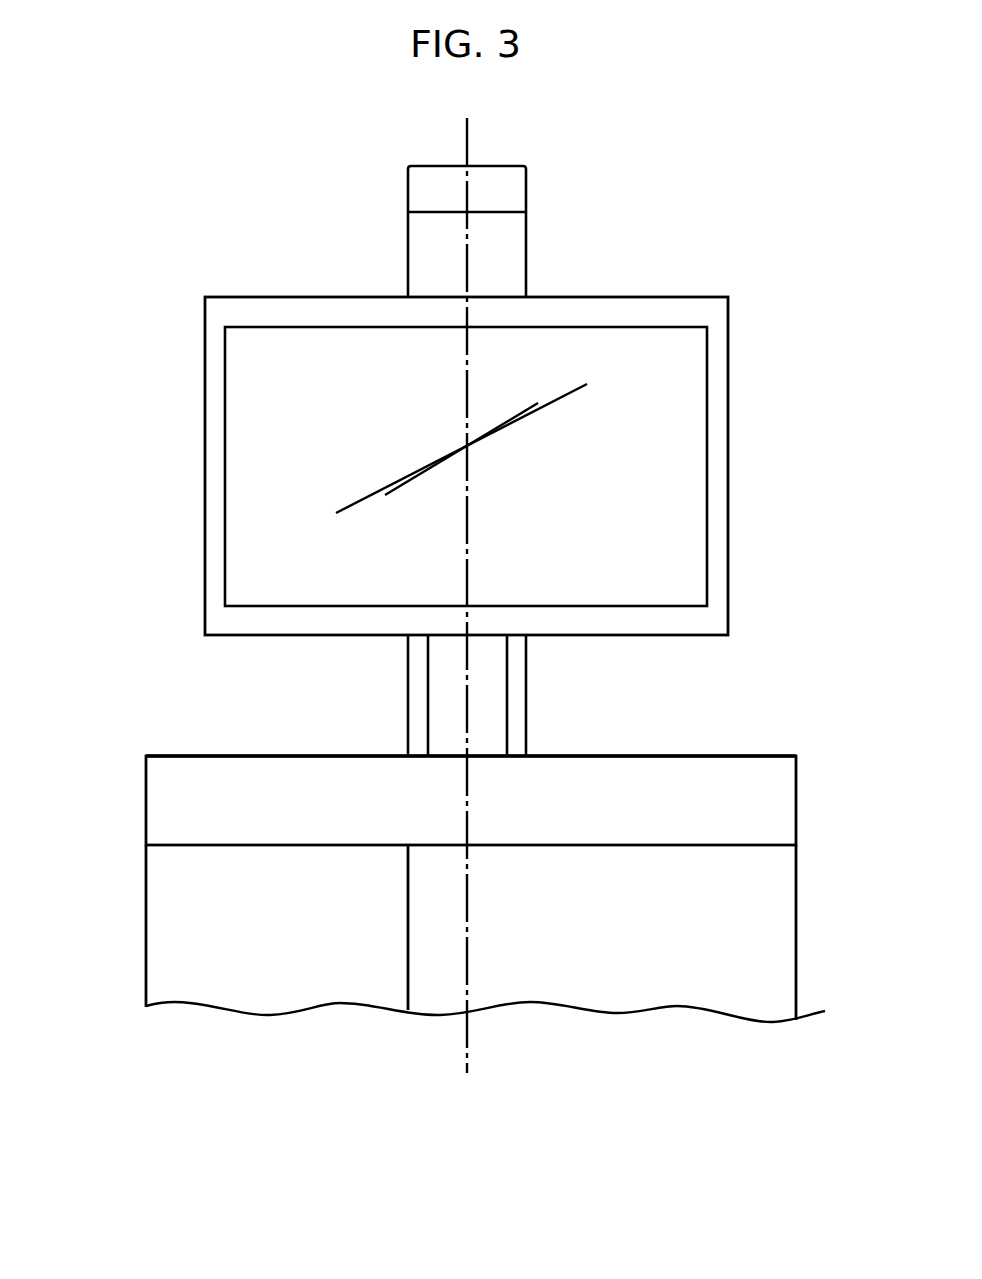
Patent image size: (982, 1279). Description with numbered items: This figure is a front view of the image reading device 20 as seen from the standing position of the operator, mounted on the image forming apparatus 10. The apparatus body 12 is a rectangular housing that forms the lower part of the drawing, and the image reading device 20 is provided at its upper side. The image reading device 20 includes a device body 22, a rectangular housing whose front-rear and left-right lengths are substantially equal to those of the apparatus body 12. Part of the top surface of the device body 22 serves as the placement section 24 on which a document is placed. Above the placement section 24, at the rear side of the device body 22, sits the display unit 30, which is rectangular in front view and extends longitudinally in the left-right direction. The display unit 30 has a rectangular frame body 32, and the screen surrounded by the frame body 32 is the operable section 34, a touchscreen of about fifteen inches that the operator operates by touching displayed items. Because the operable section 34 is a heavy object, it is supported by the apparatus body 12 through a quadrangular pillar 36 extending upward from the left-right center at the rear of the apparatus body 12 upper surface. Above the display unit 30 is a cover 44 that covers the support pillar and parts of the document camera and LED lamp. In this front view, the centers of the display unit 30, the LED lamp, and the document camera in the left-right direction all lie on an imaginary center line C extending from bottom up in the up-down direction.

The imaginary center line C is at (467, 138).
The image forming apparatus 10 is at (145, 1000).
The apparatus body 12 is at (285, 972).
The image reading device 20 is at (146, 756).
The device body 22 is at (763, 800).
The placement section 24 is at (730, 757).
The display unit 30 is at (205, 297).
The frame body 32 is at (215, 467).
The operable section 34 is at (676, 507).
The pillar 36 is at (488, 705).
The cover 44 is at (526, 245).